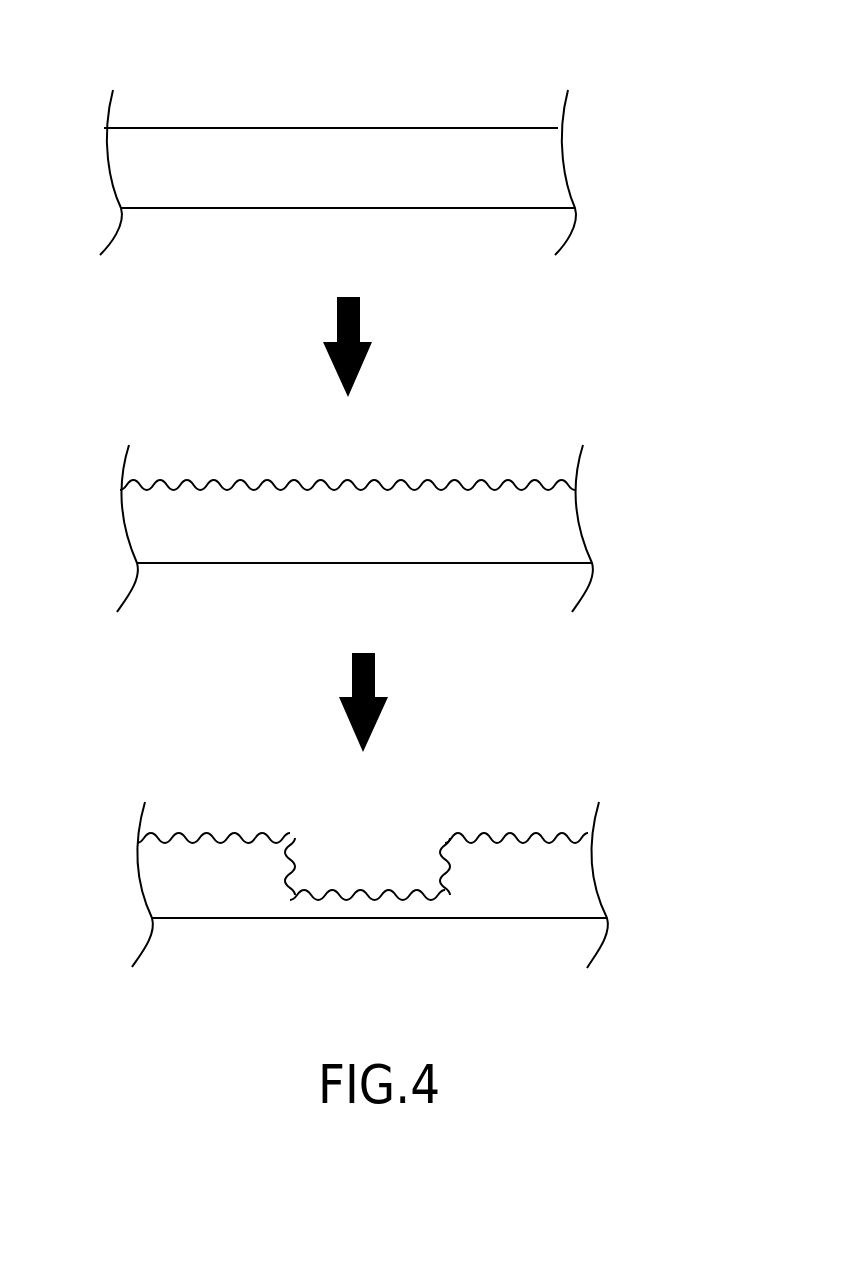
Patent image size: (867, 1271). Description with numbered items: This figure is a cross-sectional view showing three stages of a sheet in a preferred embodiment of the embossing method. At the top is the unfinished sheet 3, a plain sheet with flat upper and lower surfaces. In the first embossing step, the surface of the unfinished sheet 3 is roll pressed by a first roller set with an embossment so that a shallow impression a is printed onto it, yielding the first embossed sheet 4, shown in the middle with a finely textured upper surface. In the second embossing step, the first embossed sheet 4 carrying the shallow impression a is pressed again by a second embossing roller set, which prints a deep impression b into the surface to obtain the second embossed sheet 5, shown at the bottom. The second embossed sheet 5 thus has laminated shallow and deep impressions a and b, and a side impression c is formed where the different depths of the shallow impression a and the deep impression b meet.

The unfinished sheet 3 is at (600, 134).
The first embossed sheet 4 is at (616, 494).
The second embossed sheet 5 is at (631, 849).
The shallow impression a is at (478, 480).
The deep impression b is at (368, 892).
The side impression c is at (293, 872).